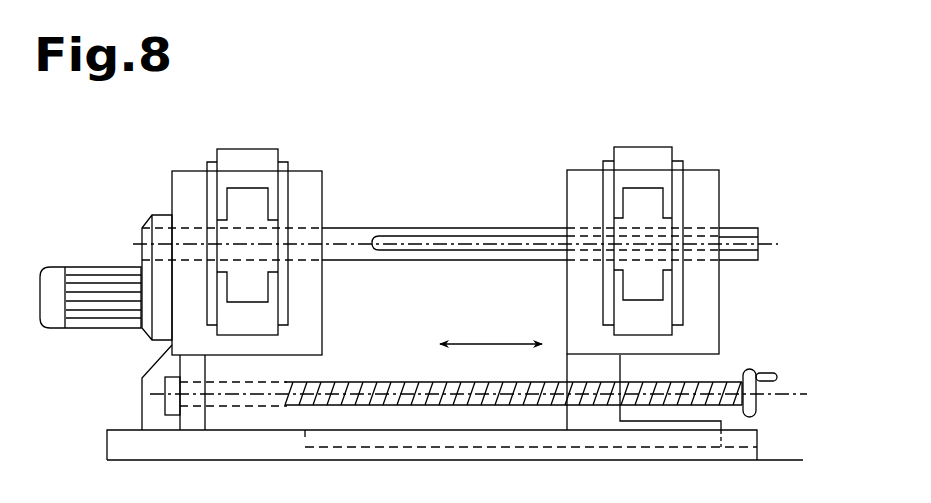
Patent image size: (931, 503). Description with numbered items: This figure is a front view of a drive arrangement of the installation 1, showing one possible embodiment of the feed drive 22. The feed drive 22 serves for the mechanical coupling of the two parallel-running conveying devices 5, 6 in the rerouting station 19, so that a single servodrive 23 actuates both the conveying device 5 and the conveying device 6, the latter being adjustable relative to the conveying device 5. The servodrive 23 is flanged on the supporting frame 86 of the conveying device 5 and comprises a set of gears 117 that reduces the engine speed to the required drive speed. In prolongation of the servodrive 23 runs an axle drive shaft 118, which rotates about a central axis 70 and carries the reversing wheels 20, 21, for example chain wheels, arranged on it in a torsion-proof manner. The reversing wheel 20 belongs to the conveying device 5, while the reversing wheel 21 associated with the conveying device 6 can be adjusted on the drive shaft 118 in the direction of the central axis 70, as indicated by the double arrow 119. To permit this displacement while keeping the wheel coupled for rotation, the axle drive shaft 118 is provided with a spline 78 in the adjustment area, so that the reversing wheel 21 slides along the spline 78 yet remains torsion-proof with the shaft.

The installation 1 is at (542, 97).
The conveying device 5 is at (235, 132).
The conveying device 6 is at (637, 106).
The rerouting station 19 is at (758, 172).
The reversing wheel 20 is at (281, 197).
The reversing wheel 21 is at (679, 184).
The feed drive 22 is at (119, 358).
The servodrive 23 is at (100, 275).
The central axis 70 is at (778, 246).
The spline 78 is at (750, 230).
The supporting frame 86 is at (185, 203).
The set of gears 117 is at (156, 236).
The axle drive shaft 118 is at (362, 235).
The double arrow 119 is at (490, 340).